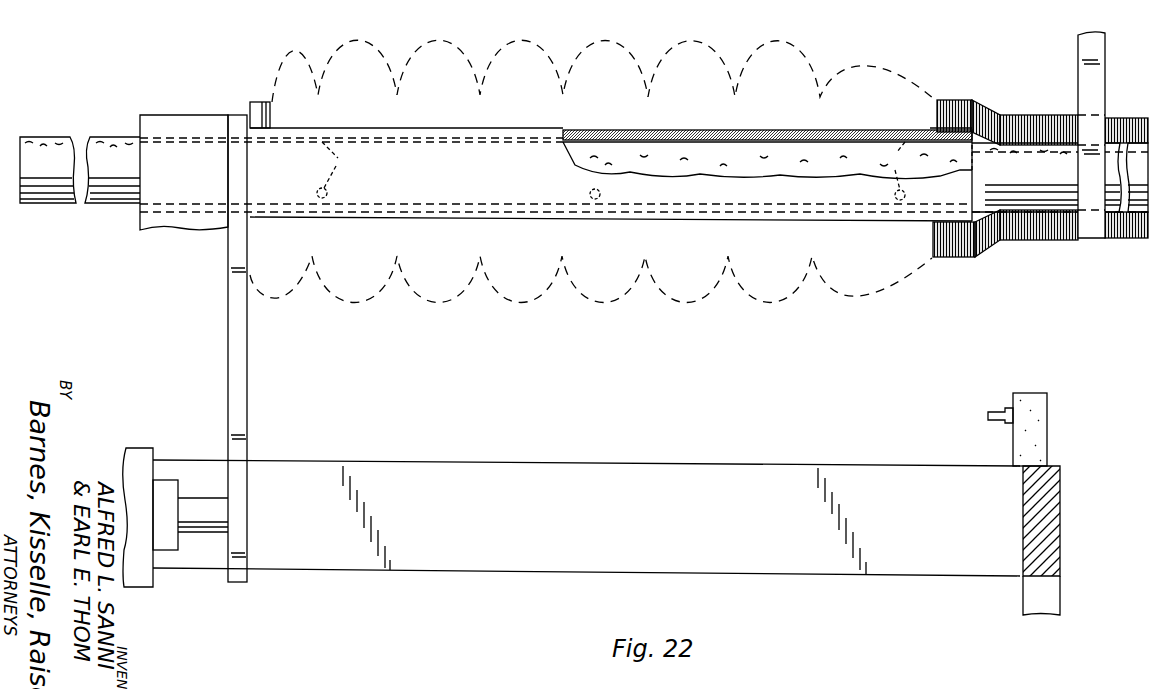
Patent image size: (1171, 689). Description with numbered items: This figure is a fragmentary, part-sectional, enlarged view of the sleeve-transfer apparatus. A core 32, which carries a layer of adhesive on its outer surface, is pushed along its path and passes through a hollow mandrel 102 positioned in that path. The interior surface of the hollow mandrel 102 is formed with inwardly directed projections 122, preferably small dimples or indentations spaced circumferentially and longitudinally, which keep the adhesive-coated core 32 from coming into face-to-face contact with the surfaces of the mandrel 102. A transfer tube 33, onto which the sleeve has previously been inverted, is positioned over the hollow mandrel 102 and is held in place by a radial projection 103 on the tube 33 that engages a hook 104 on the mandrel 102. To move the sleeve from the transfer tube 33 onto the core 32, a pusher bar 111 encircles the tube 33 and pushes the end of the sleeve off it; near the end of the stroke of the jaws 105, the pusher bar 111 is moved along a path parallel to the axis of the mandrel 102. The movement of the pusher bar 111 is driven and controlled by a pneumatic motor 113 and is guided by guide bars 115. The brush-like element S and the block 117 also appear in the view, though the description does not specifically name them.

The core 32 is at (50, 143).
The transfer tube 33 is at (930, 134).
The brush bristles S is at (985, 104).
The hollow mandrel 102 is at (575, 131).
The radial projection 103 is at (258, 102).
The hook 104 is at (275, 128).
The jaws 105 is at (1095, 240).
The pusher bar 111 is at (230, 323).
The pneumatic motor 113 is at (144, 452).
The guide bars 115 is at (538, 462).
The end post block 117 is at (1033, 393).
The projections 122 is at (611, 171).